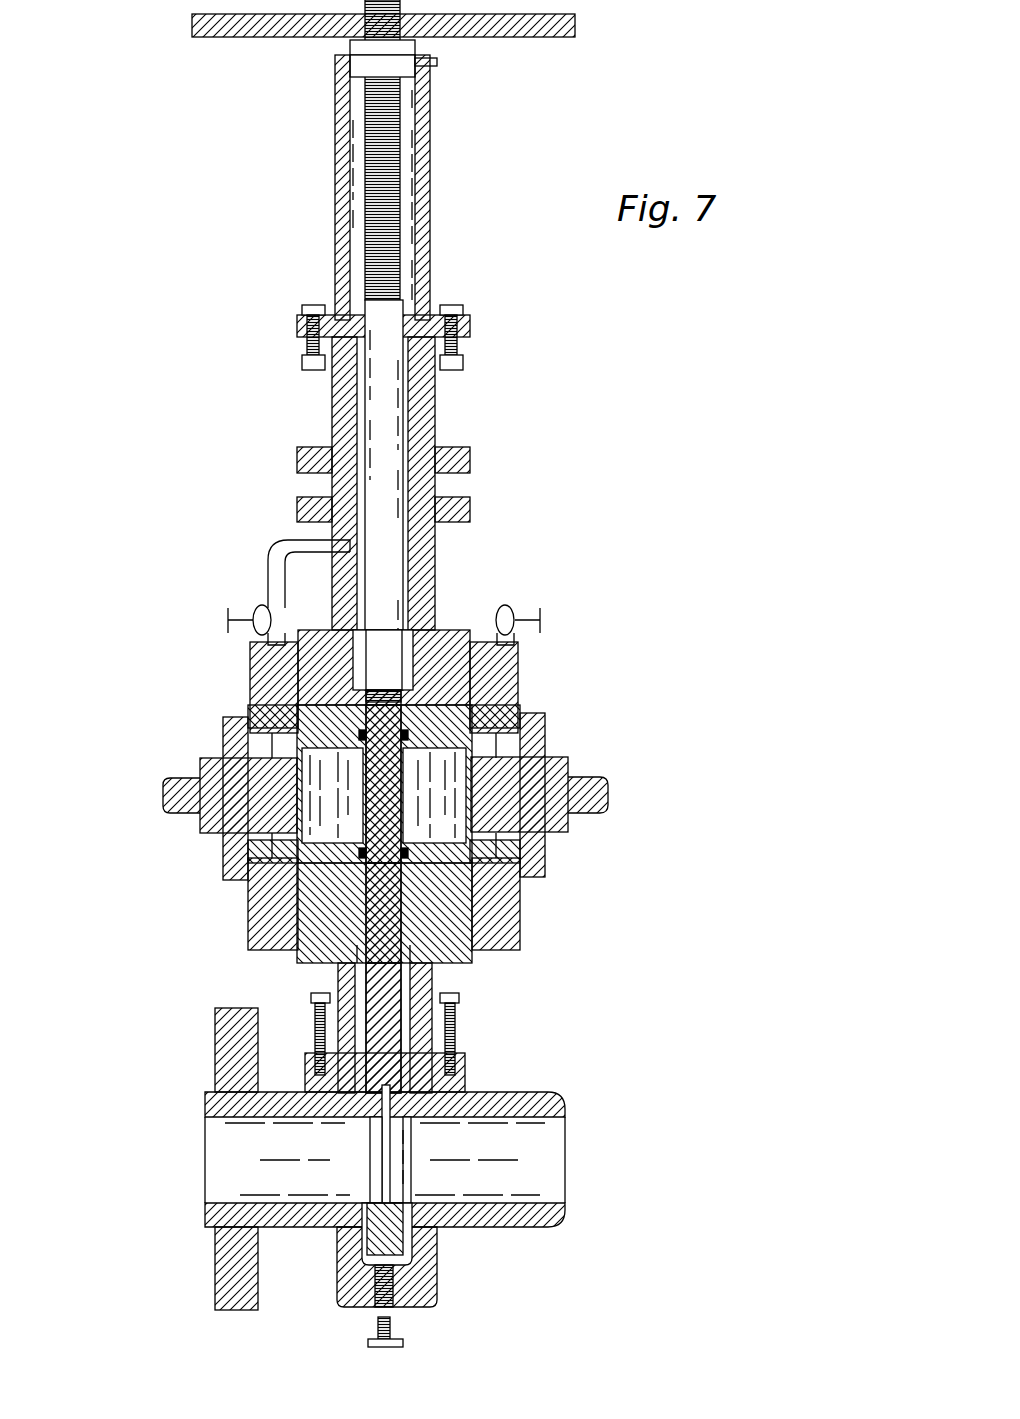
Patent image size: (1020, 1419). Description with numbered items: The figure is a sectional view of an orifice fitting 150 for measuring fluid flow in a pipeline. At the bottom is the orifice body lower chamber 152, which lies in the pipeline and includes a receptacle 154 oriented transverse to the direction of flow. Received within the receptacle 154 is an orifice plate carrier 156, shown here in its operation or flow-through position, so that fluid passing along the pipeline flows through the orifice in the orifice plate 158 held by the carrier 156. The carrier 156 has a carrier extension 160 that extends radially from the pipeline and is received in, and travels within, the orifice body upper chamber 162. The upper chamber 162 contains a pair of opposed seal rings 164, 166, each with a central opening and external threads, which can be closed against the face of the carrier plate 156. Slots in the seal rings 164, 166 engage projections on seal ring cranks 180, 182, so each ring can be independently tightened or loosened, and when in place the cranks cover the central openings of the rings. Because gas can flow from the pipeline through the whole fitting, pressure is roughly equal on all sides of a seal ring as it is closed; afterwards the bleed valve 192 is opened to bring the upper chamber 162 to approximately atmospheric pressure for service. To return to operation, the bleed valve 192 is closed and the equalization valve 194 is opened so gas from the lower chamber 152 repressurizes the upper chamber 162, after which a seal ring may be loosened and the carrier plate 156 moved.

The orifice fitting 150 is at (577, 482).
The orifice body lower chamber 152 is at (556, 1222).
The receptacle 154 is at (415, 1240).
The orifice plate carrier 156 is at (450, 1195).
The orifice plate 158 is at (372, 1132).
The carrier extension 160 is at (405, 942).
The orifice body upper chamber 162 is at (638, 836).
The seal ring 164 is at (262, 912).
The seal ring 166 is at (488, 712).
The seal ring crank 180 is at (175, 815).
The seal ring crank 182 is at (595, 775).
The bleed valve 192 is at (518, 600).
The equalization valve 194 is at (250, 600).